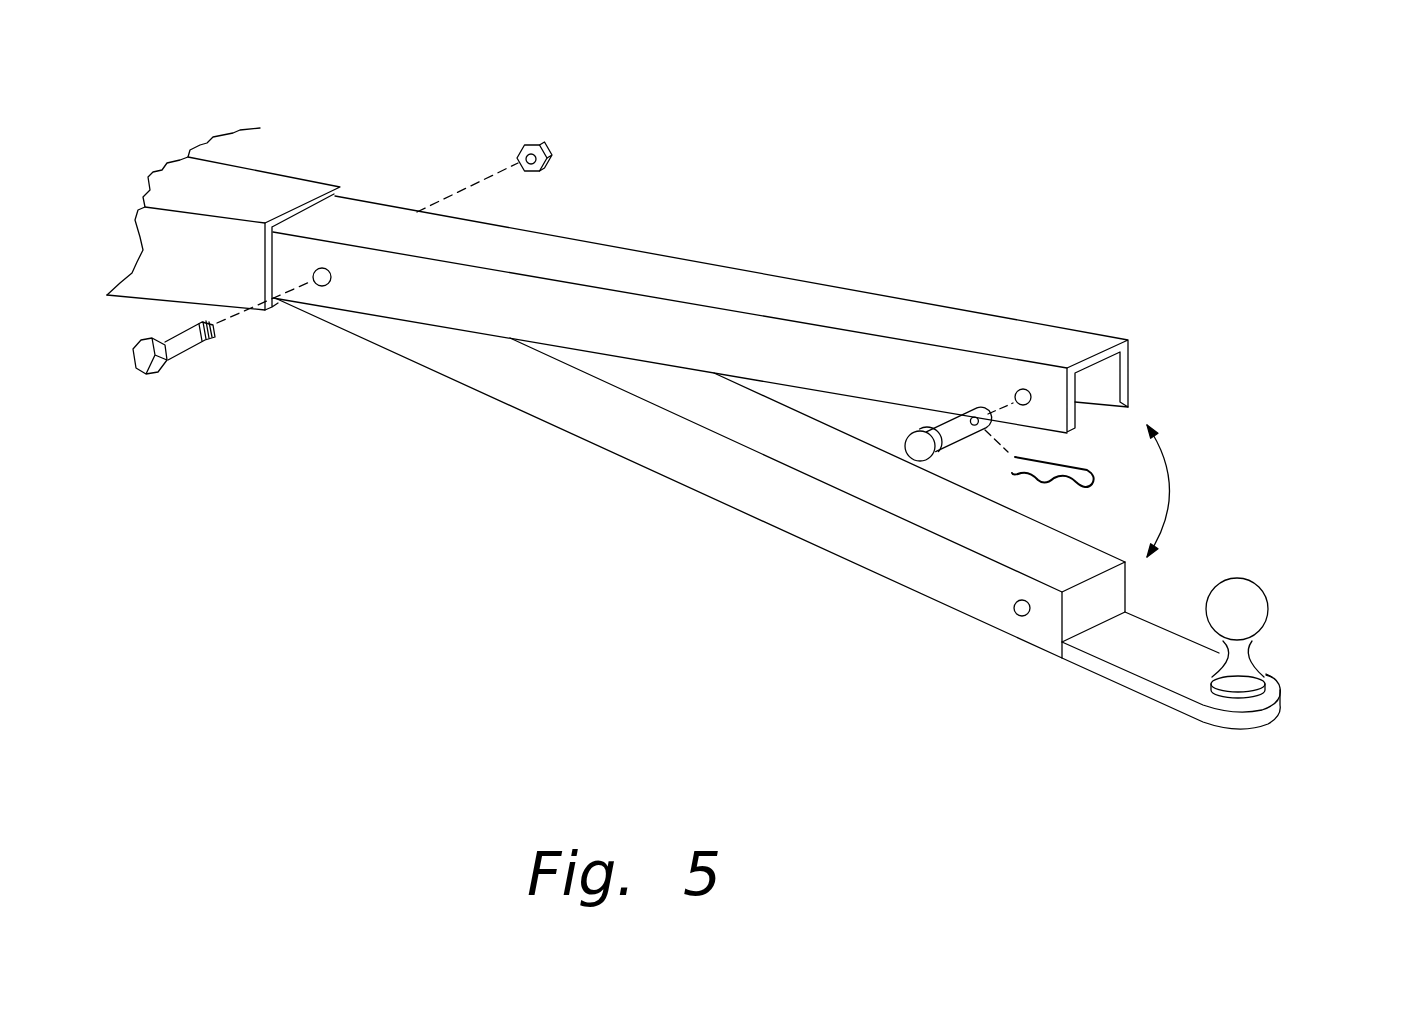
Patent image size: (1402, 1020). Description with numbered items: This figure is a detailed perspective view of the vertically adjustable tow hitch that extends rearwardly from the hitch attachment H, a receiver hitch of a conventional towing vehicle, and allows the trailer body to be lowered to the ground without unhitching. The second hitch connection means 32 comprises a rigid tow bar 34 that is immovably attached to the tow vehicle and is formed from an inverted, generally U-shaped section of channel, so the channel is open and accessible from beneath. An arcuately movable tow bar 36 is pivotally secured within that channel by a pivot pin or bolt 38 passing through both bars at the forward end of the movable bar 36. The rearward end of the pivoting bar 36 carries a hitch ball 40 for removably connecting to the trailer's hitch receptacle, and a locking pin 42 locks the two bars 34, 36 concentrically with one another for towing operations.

The hitch attachment H is at (277, 172).
The second hitch connection means 32 is at (455, 622).
The rigid tow bar 34 is at (850, 290).
The arcuately movable tow bar 36 is at (752, 515).
The pivot pin or bolt 38 is at (185, 358).
The hitch ball 40 is at (1268, 593).
The locking pin 42 is at (950, 418).